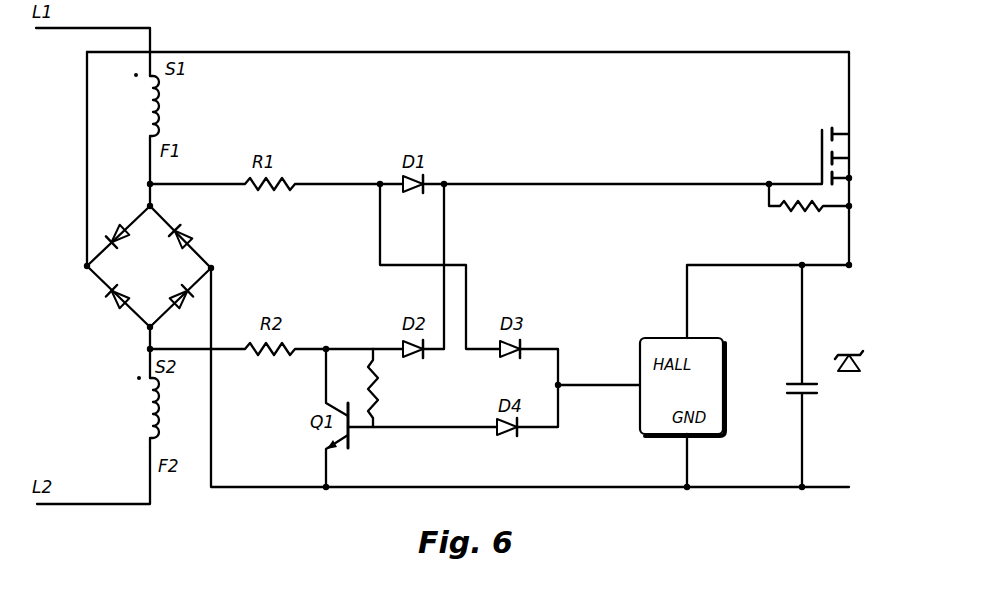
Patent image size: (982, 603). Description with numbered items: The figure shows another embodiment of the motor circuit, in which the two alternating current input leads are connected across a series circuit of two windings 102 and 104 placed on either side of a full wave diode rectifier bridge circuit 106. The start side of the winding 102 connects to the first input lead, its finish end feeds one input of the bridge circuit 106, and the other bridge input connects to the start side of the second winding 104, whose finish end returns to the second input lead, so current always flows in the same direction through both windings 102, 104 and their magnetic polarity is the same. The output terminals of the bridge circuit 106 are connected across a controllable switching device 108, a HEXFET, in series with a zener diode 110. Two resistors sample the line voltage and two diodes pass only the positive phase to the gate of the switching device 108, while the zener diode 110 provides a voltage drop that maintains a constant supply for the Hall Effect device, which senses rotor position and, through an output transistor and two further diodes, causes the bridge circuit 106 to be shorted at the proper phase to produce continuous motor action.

The winding 102 is at (160, 107).
The second winding 104 is at (148, 414).
The full wave diode rectifier bridge circuit 106 is at (200, 251).
The controllable switching device 108 is at (822, 147).
The zener diode 110 is at (863, 367).